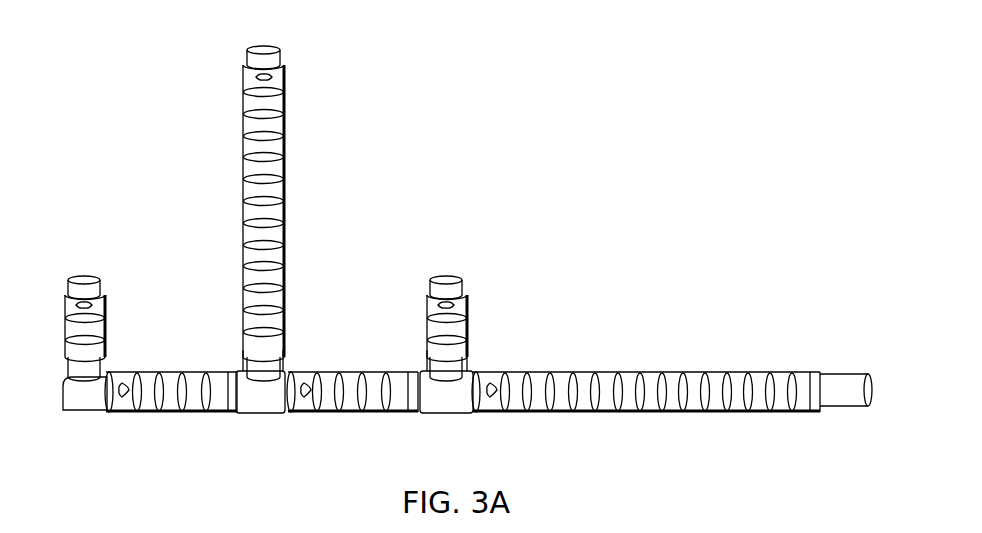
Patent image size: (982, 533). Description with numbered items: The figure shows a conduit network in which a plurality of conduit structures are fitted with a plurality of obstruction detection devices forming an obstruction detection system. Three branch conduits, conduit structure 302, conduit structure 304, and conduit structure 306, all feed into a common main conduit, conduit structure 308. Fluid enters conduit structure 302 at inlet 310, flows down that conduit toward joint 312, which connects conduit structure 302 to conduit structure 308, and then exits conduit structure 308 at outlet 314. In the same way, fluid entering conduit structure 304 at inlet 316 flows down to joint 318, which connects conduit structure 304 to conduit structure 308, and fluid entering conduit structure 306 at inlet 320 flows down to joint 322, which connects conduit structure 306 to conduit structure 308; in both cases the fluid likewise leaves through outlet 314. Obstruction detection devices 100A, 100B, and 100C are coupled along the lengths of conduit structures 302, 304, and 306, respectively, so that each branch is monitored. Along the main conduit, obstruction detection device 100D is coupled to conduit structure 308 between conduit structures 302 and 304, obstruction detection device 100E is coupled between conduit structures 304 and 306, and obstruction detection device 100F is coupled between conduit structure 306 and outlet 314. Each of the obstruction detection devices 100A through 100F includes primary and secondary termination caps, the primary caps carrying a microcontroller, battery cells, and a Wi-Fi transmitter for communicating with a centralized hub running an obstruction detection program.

The obstruction detection device 100A is at (105, 324).
The obstruction detection device 100B is at (285, 206).
The obstruction detection device 100C is at (467, 327).
The obstruction detection device 100D is at (168, 412).
The obstruction detection device 100E is at (350, 412).
The obstruction detection device 100F is at (648, 412).
The conduit structure 302 is at (70, 290).
The conduit structure 304 is at (280, 58).
The conduit structure 306 is at (462, 288).
The conduit structure 308 is at (872, 389).
The inlet 310 is at (84, 278).
The joint 312 is at (89, 404).
The outlet 314 is at (848, 398).
The inlet 316 is at (264, 50).
The joint 318 is at (262, 405).
The inlet 320 is at (445, 280).
The joint 322 is at (447, 413).